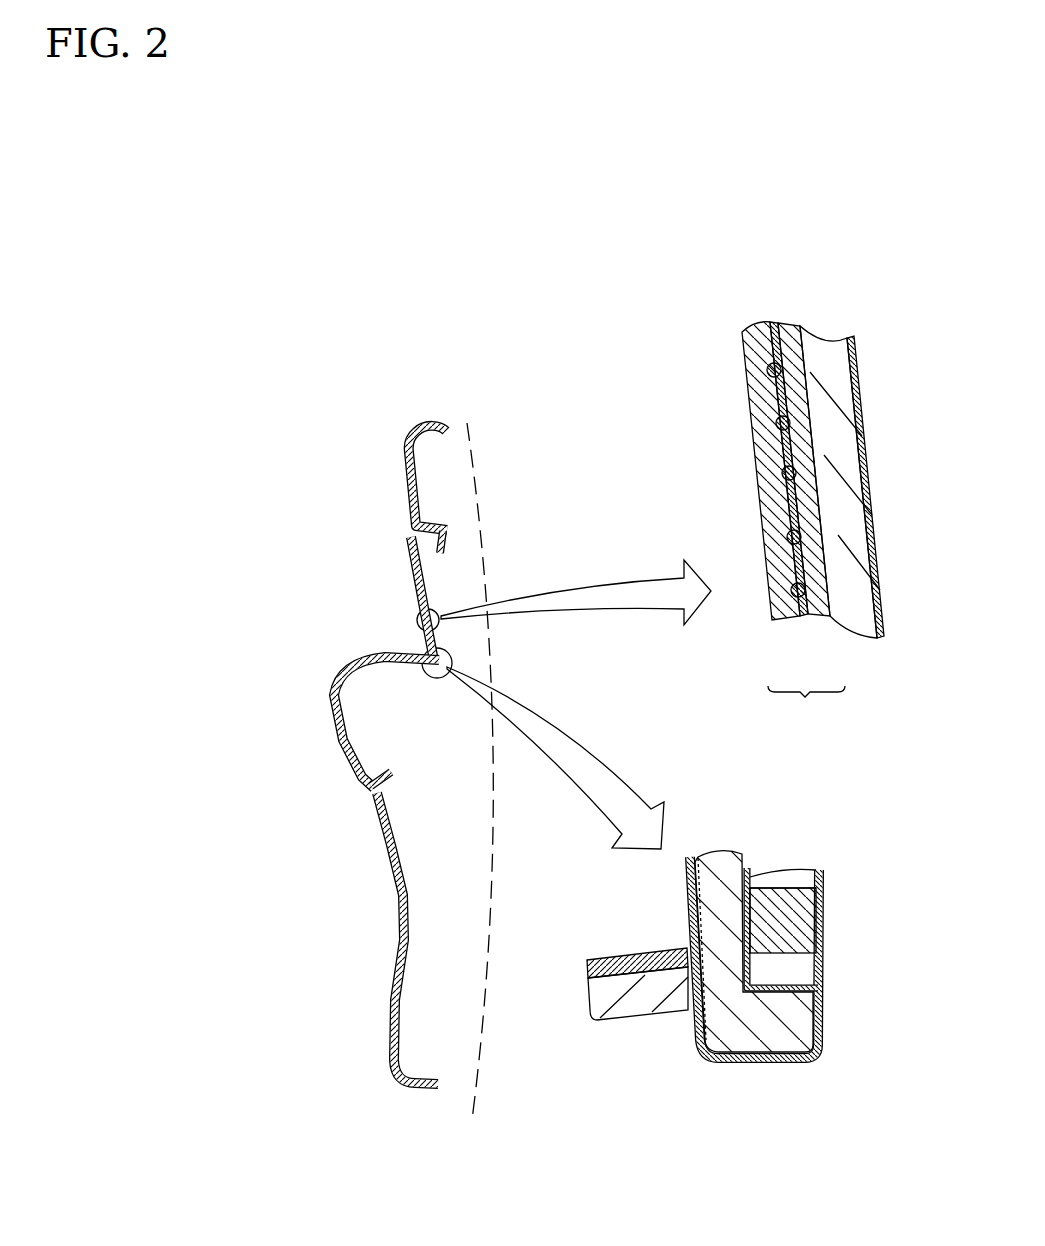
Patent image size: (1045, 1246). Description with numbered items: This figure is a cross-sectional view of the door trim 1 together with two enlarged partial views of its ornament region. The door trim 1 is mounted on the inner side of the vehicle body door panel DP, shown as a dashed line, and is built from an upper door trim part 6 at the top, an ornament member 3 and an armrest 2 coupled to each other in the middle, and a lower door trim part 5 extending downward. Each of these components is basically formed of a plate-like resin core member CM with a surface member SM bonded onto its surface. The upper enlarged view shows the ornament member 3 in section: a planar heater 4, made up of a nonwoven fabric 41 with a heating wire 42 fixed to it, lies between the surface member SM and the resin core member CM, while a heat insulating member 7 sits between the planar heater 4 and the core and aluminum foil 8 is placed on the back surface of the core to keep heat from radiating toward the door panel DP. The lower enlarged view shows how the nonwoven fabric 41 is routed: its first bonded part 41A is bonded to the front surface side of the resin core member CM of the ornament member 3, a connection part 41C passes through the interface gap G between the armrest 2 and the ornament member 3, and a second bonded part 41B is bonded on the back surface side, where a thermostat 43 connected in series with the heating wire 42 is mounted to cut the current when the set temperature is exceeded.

The door trim 1 is at (392, 396).
The armrest 2 is at (347, 676).
The ornament member 3 is at (413, 573).
The planar heater 4 is at (806, 705).
The lower door trim part 5 is at (396, 896).
The upper door trim part 6 is at (404, 486).
The heat insulating member 7 is at (809, 371).
The aluminum foil 8 is at (866, 406).
The nonwoven fabric 41 is at (808, 618).
The first bonded part 41A is at (782, 389).
The second bonded part 41B is at (758, 869).
The connection part 41C is at (697, 1065).
The heating wire 42 is at (795, 598).
The thermostat 43 is at (805, 918).
The surface member SM is at (748, 332).
The resin core member CM is at (821, 330).
The interface gap G is at (672, 938).
The vehicle body door panel DP is at (468, 1106).